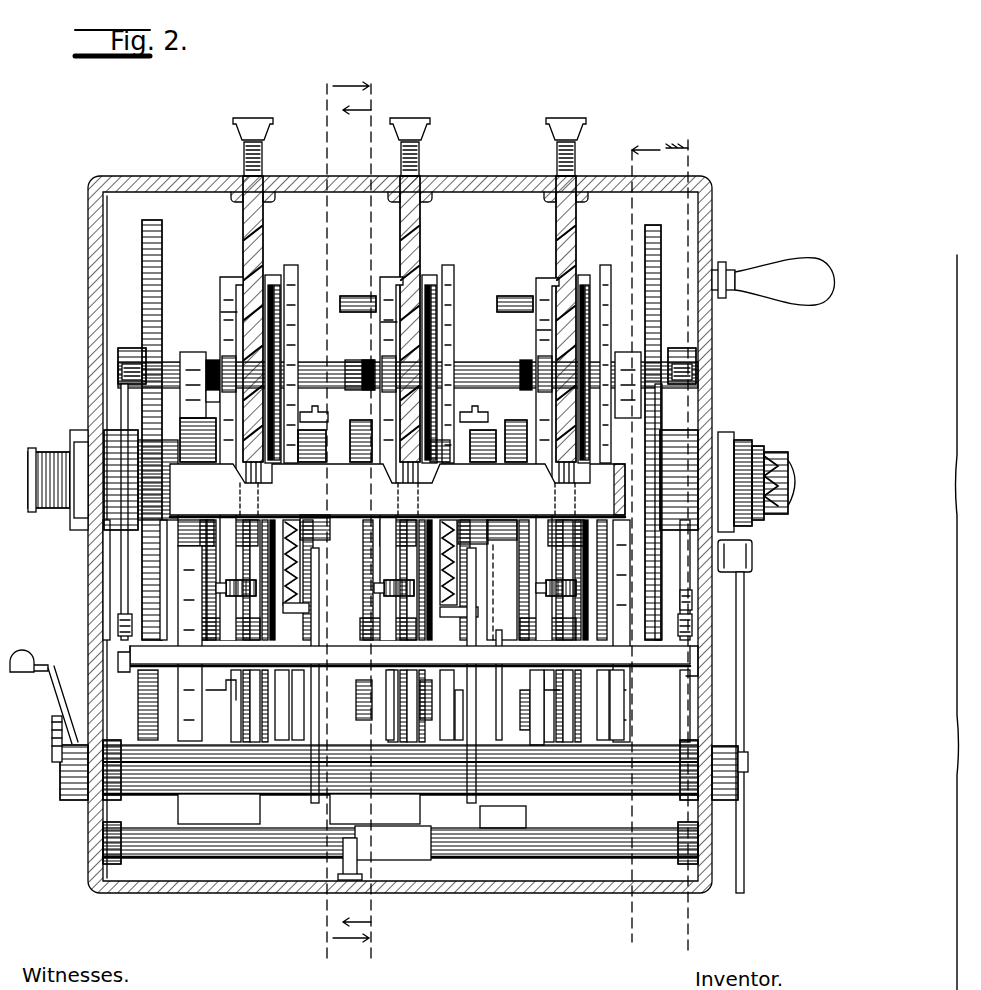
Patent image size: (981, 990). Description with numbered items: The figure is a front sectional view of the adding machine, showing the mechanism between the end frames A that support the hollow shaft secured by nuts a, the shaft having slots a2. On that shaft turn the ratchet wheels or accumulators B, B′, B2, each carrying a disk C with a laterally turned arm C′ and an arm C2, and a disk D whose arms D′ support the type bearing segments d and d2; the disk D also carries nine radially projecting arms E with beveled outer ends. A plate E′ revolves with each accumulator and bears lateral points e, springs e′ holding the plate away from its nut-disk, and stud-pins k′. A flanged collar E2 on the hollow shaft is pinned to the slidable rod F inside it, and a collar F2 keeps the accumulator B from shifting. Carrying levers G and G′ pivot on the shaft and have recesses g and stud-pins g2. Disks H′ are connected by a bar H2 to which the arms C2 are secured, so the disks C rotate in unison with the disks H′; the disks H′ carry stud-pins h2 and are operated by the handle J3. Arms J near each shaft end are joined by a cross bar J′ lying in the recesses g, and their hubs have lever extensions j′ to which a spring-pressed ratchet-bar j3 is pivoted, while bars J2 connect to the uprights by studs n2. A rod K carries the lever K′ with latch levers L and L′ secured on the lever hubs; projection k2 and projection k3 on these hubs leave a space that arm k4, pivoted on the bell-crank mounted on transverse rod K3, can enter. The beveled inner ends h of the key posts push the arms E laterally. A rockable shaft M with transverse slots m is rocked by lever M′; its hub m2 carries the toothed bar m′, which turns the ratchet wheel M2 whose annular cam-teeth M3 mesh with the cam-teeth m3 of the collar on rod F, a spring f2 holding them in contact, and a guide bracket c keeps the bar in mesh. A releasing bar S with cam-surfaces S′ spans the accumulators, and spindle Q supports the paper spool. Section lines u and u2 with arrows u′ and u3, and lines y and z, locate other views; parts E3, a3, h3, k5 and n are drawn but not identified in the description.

The end frame A is at (90, 344).
The ratchet wheel B is at (606, 266).
The ratchet wheel B′ is at (450, 266).
The ratchet wheel B2 is at (294, 266).
The disk C is at (279, 352).
The arm C′ is at (273, 274).
The arm C2 is at (444, 705).
The disk D is at (274, 330).
The arm D′ is at (262, 716).
The radially projecting arm E is at (263, 240).
The plate E′ is at (221, 312).
The flanged collar E2 is at (200, 448).
The spindle catch E3 is at (394, 407).
The slidable rod F is at (48, 508).
The collar F2 is at (397, 453).
The carrying lever G is at (466, 520).
The carrying lever G′ is at (312, 515).
The disk H′ is at (162, 240).
The bar H2 is at (531, 742).
The arm J is at (700, 655).
The cross bar J′ is at (395, 658).
The bar J2 is at (126, 348).
The handle J3 is at (773, 282).
The rod K is at (400, 770).
The lever K′ is at (360, 420).
The transverse rod K3 is at (400, 843).
The latch lever L is at (478, 582).
The latch lever L′ is at (320, 570).
The rockable shaft M is at (782, 456).
The lever M′ is at (60, 696).
The ratchet wheel M2 is at (746, 440).
The annular cam-teeth M3 is at (760, 448).
The spindle Q is at (499, 652).
The releasing bar S is at (397, 490).
The cam-surface S′ is at (272, 466).
The nut a is at (74, 530).
The slot a2 is at (472, 717).
The collar a3 is at (526, 364).
The guide bracket c is at (735, 556).
The type bearing segment d is at (212, 366).
The type bearing segment d2 is at (398, 705).
The point e is at (229, 276).
The spring e′ is at (230, 358).
The spring f2 is at (50, 452).
The recess g is at (409, 129).
The stud-pin g2 is at (310, 608).
The inner end of key post h is at (578, 108).
The stud-pin h2 is at (718, 626).
The nut h3 is at (407, 372).
The lever extension j′ is at (124, 386).
The ratchet-bar j3 is at (693, 600).
The stud-pin k′ is at (350, 296).
The projection k2 is at (299, 806).
The projection k3 is at (330, 816).
The arm k4 is at (300, 864).
The foot k5 is at (362, 876).
The slot m is at (482, 762).
The toothed bar m′ is at (746, 634).
The hub m2 is at (738, 790).
The cam-teeth m3 is at (790, 482).
The gear n is at (52, 756).
The stud n2 is at (192, 360).
The section line u is at (371, 511).
The arrow u′ is at (353, 512).
The section line u2 is at (345, 519).
The arrow u3 is at (379, 513).
The section line y is at (682, 546).
The section line z is at (643, 556).